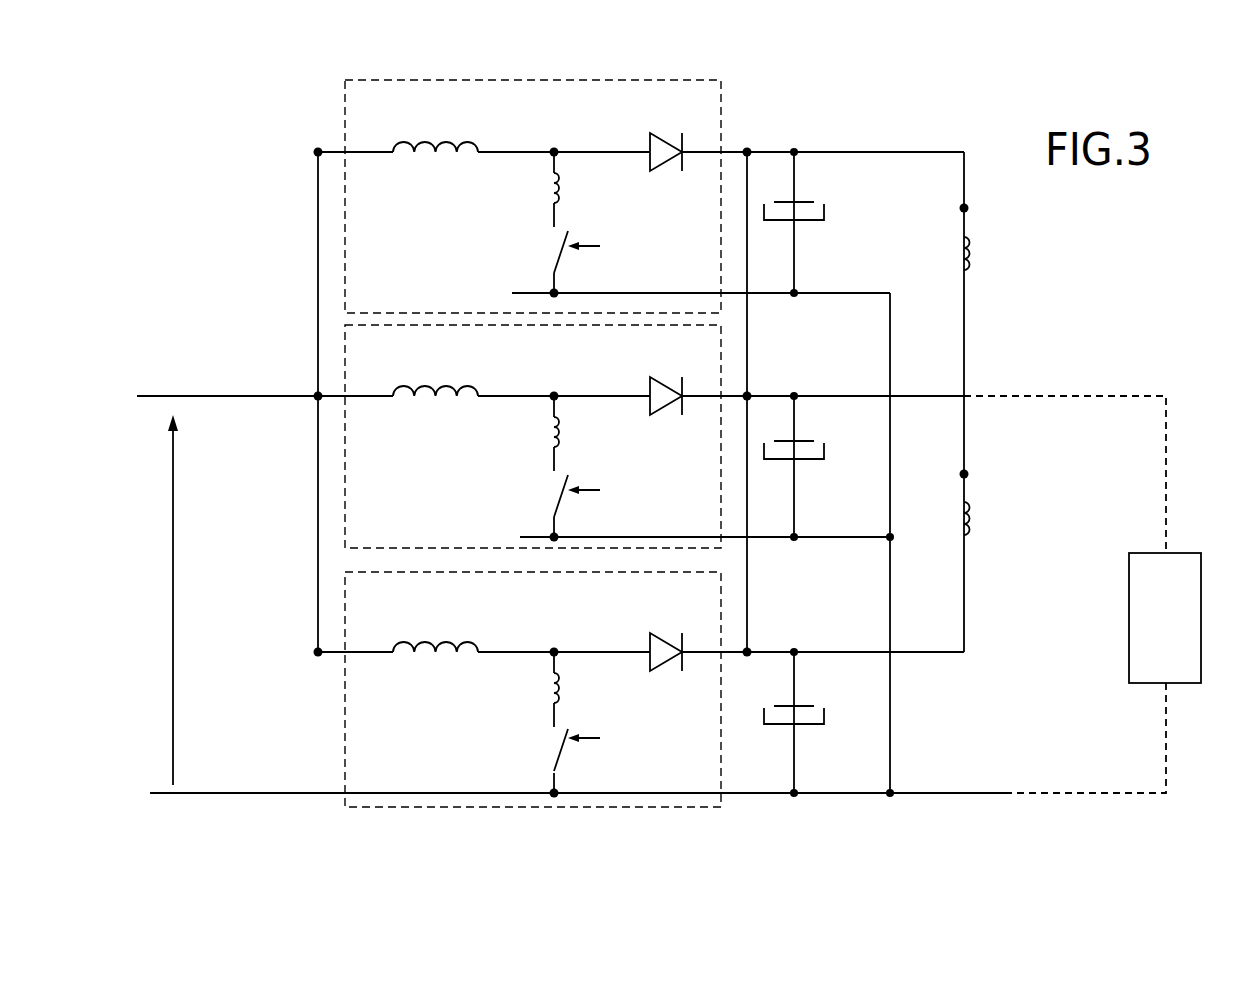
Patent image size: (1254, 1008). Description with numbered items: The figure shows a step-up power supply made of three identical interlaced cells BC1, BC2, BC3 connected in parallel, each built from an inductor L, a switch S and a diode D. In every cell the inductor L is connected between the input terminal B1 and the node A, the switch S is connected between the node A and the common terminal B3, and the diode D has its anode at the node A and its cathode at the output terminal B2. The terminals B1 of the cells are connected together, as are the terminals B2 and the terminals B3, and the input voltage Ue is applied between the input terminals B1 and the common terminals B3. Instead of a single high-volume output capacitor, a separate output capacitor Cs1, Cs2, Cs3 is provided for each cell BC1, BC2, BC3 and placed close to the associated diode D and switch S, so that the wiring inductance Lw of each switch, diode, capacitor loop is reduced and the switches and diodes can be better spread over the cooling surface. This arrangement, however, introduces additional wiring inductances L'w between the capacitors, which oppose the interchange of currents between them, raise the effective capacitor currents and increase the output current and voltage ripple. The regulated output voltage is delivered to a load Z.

The cell BC1 is at (345, 807).
The cell BC2 is at (345, 332).
The cell BC3 is at (345, 80).
The input terminal B1 is at (318, 652).
The inductor L is at (435, 367).
The node A is at (556, 649).
The diode D is at (650, 641).
The wiring inductance Lw is at (535, 440).
The switch S is at (558, 501).
The common terminal B3 is at (554, 793).
The output terminal B2 is at (747, 650).
The output capacitor Cs1 is at (820, 718).
The output capacitor Cs2 is at (827, 454).
The output capacitor Cs3 is at (826, 213).
The wiring inductance L'w is at (992, 373).
The load Z is at (1165, 618).
The input voltage Ue is at (154, 600).